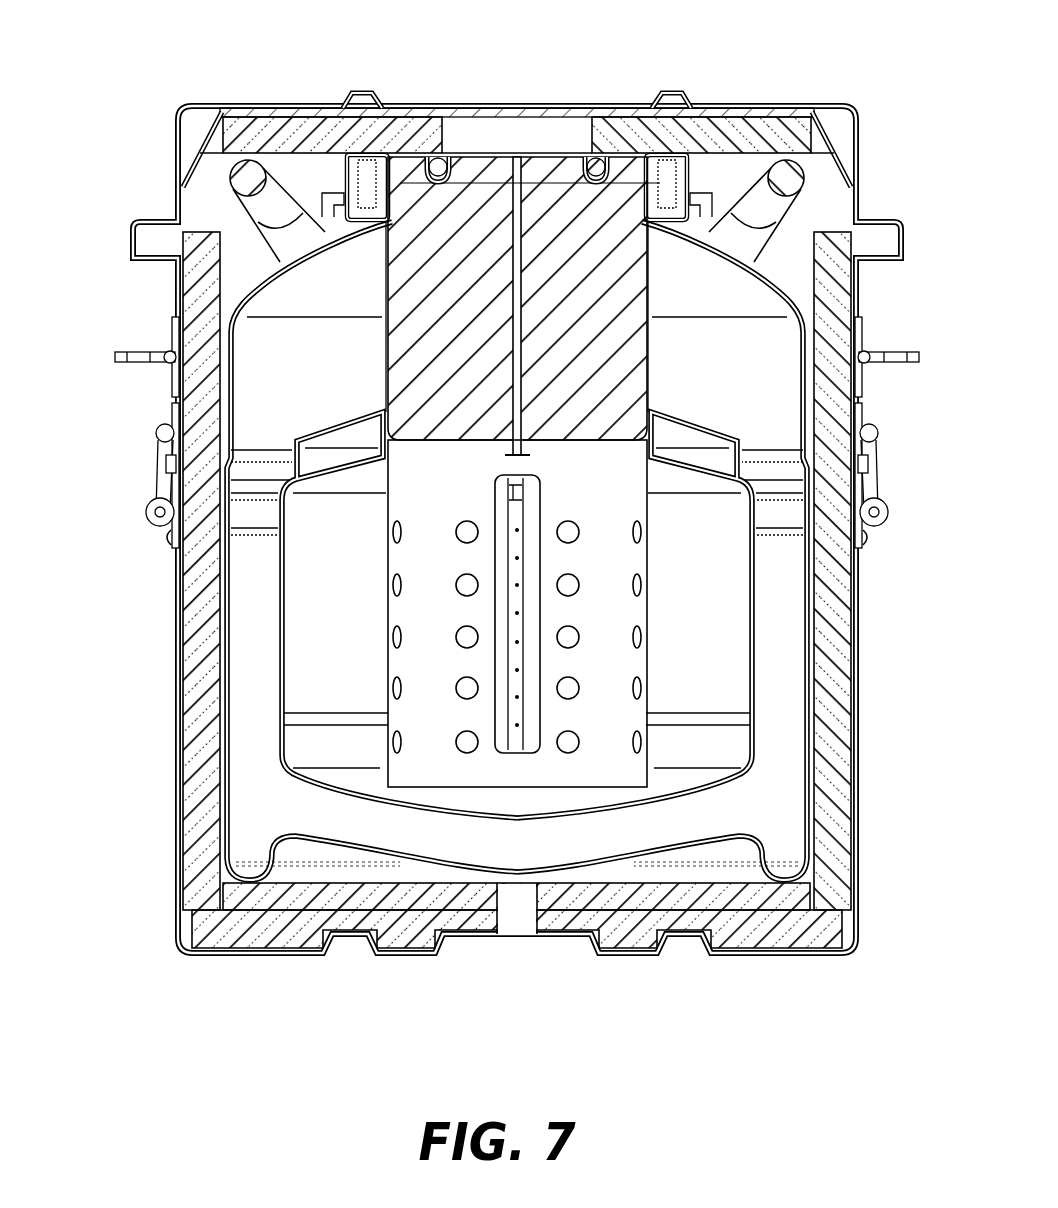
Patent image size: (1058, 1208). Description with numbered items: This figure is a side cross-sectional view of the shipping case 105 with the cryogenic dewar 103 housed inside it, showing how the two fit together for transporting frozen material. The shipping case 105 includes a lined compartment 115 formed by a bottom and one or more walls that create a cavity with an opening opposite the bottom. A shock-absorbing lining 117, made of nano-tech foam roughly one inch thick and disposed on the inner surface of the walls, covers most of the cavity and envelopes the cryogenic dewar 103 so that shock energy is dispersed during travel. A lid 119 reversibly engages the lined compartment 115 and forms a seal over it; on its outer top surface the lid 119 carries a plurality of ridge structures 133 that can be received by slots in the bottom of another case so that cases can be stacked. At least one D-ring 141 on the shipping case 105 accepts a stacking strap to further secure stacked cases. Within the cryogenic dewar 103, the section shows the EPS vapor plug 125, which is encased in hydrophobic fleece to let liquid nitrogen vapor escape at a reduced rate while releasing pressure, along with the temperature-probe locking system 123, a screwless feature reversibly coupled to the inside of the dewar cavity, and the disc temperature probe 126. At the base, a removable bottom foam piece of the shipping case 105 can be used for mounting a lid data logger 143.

The shipping case 105 is at (232, 74).
The ridge structures 133 is at (692, 95).
The lid 119 is at (866, 133).
The D-ring 141 is at (118, 356).
The EPS vapor plug 125 is at (633, 330).
The cryogenic dewar 103 is at (250, 400).
The disc temperature probe 126 is at (528, 455).
The temperature-probe locking system 123 is at (515, 510).
The lined compartment 115 is at (858, 648).
The shock-absorbing lining 117 is at (196, 780).
The lid data logger 143 is at (245, 900).